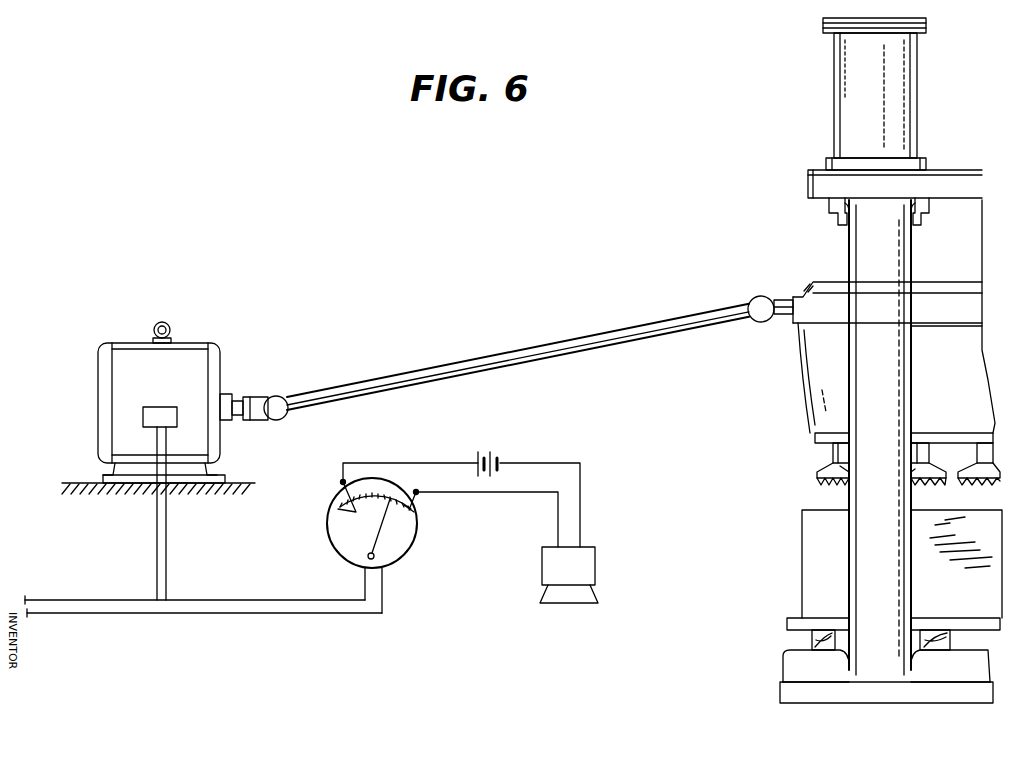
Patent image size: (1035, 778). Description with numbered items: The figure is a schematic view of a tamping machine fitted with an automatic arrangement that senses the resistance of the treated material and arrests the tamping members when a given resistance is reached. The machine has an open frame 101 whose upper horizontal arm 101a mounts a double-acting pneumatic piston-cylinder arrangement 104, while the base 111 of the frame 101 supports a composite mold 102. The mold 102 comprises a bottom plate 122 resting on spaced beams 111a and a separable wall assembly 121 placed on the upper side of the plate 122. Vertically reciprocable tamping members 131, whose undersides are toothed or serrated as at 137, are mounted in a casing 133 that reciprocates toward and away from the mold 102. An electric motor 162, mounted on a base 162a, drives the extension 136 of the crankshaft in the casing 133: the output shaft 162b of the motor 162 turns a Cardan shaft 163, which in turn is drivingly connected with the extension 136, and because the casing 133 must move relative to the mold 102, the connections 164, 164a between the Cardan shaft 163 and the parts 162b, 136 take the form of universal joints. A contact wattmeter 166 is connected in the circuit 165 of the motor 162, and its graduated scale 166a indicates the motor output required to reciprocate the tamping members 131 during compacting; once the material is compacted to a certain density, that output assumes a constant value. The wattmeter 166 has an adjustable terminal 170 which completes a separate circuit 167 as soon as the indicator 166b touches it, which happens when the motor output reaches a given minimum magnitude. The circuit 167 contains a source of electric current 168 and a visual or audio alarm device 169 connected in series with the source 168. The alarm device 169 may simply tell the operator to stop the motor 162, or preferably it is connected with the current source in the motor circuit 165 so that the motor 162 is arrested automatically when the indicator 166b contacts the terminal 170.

The double-acting pneumatic piston-cylinder arrangement 104 is at (832, 116).
The horizontal arm 101a is at (955, 176).
The open frame 101 is at (854, 247).
The extension of the crankshaft 136 is at (781, 301).
The connection 164a is at (760, 313).
The casing 133 is at (826, 392).
The tamping member 131 is at (835, 462).
The toothed tamping surface 137 is at (833, 484).
The composite mold 102 is at (803, 568).
The wall assembly 121 is at (978, 578).
The bottom plate 122 is at (985, 624).
The beam 111a is at (820, 642).
The base 111 is at (785, 665).
The electric motor 162 is at (190, 353).
The base 162a is at (78, 487).
The output shaft 162b is at (232, 395).
The connection 164 is at (284, 398).
The Cardan shaft 163 is at (435, 371).
The motor circuit 165 is at (157, 582).
The contact wattmeter 166 is at (398, 556).
The graduated scale 166a is at (378, 490).
The indicator 166b is at (382, 528).
The adjustable terminal 170 is at (350, 519).
The source of electric current 168 is at (502, 455).
The circuit 167 is at (553, 474).
The alarm device 169 is at (580, 567).